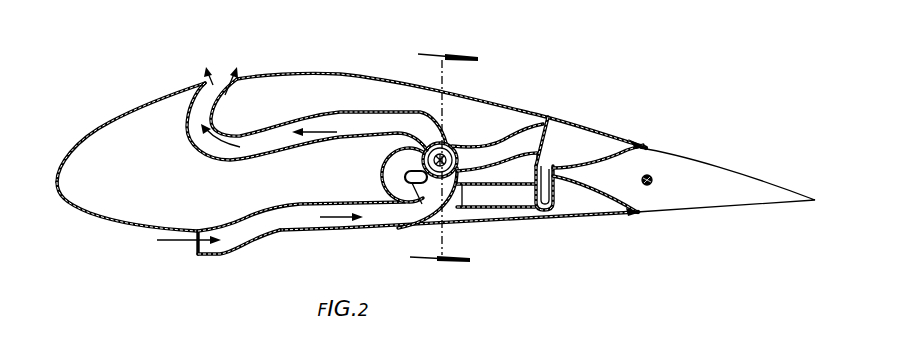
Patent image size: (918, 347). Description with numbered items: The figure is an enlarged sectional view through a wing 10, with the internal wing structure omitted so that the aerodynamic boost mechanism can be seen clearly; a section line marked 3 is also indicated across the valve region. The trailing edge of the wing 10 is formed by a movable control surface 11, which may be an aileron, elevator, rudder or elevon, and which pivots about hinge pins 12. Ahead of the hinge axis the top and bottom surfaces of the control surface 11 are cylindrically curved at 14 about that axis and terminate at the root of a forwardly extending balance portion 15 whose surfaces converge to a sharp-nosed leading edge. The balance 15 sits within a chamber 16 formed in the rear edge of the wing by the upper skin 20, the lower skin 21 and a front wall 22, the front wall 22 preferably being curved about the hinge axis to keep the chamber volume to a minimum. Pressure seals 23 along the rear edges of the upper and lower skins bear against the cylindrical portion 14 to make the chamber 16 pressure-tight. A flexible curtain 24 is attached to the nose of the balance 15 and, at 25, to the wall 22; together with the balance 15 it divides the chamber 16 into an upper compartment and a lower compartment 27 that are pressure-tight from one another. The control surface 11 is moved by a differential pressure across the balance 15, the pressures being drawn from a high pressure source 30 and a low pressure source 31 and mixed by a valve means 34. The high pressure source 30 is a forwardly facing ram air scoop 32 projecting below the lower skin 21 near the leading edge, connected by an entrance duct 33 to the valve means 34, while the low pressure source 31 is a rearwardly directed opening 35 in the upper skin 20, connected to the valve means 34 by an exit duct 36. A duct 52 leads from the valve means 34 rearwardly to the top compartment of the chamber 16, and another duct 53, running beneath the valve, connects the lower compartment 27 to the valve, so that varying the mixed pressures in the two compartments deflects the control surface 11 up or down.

The wing 10 is at (307, 70).
The control surface 11 is at (748, 182).
The hinge pins 12 is at (655, 180).
The cylindrically curved portion 14 is at (632, 140).
The balance portion 15 is at (574, 172).
The chamber 16 is at (572, 133).
The upper skin 20 is at (507, 108).
The lower skin 21 is at (506, 228).
The front wall 22 is at (538, 156).
The pressure seals 23 is at (648, 148).
The flexible curtain 24 is at (540, 218).
The attachment point of curtain to wall 25 is at (535, 168).
The lower compartment 27 is at (594, 186).
The high pressure source 30 is at (189, 252).
The low pressure source 31 is at (210, 70).
The ram air scoop 32 is at (217, 256).
The entrance duct 33 is at (350, 201).
The valve means 34 is at (397, 145).
The rearwardly directed opening 35 is at (240, 74).
The exit duct 36 is at (270, 140).
The duct to top compartment 52 is at (506, 138).
The duct to bottom compartment 53 is at (481, 208).
The section line 3- 3 is at (444, 158).